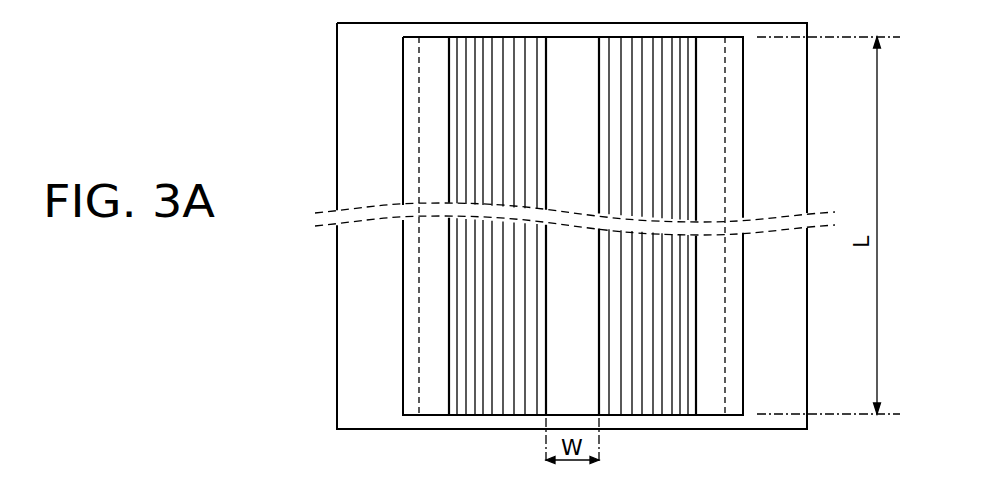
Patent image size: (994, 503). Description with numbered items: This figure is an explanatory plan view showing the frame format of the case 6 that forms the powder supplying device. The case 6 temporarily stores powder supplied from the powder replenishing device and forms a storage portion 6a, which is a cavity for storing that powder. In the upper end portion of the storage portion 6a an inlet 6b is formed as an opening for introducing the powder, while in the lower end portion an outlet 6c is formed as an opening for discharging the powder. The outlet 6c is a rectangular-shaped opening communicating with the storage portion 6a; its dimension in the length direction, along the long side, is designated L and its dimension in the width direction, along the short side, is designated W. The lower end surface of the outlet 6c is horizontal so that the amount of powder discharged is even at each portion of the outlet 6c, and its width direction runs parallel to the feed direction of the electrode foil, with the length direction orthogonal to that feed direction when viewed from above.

The case 6 is at (317, 122).
The storage portion 6a is at (420, 383).
The inlet 6b is at (403, 317).
The outlet 6c is at (547, 392).